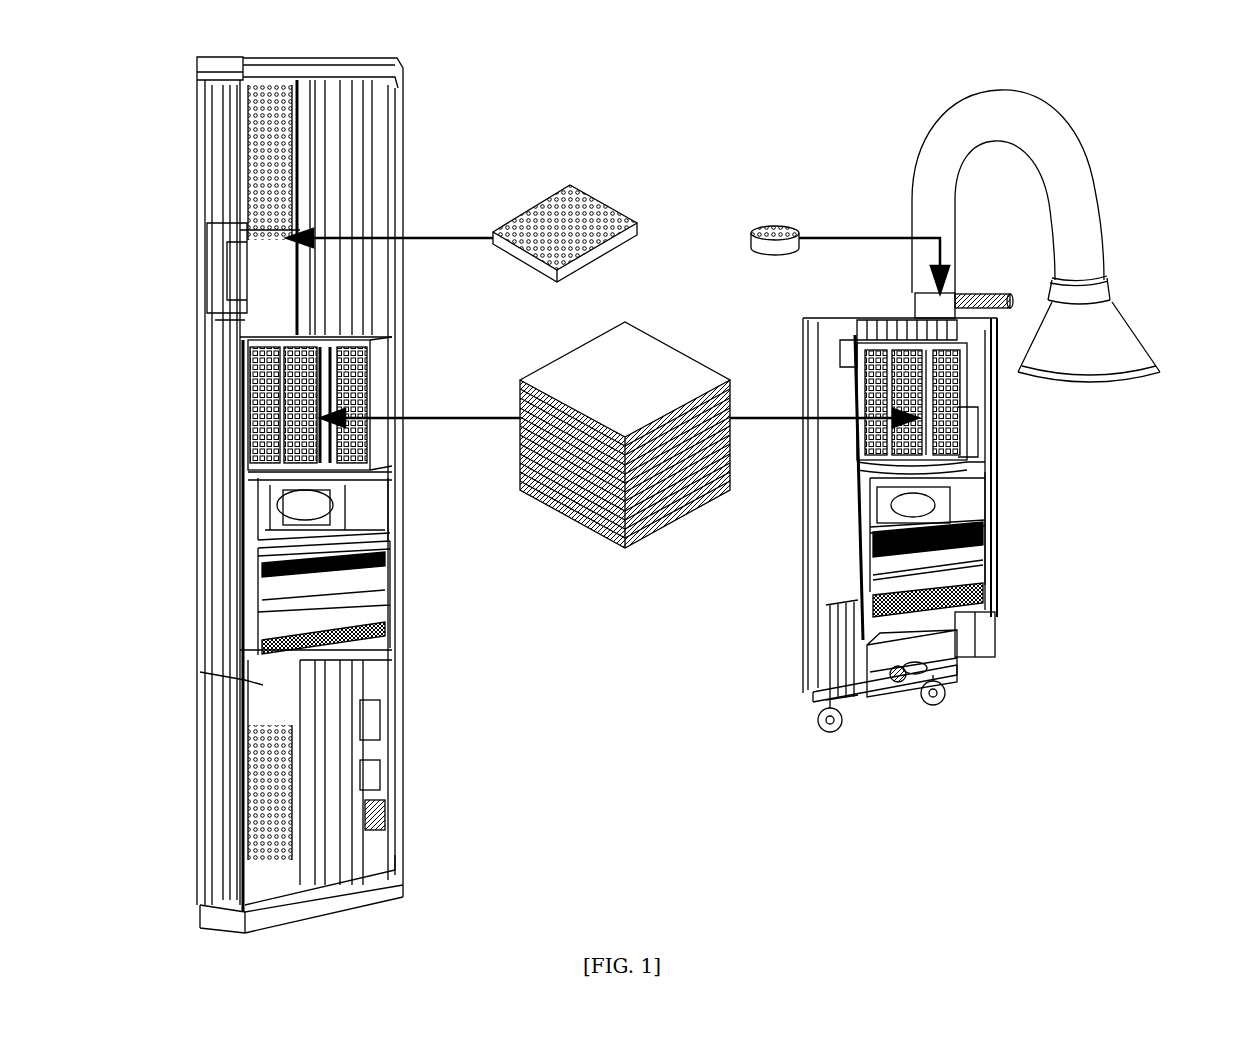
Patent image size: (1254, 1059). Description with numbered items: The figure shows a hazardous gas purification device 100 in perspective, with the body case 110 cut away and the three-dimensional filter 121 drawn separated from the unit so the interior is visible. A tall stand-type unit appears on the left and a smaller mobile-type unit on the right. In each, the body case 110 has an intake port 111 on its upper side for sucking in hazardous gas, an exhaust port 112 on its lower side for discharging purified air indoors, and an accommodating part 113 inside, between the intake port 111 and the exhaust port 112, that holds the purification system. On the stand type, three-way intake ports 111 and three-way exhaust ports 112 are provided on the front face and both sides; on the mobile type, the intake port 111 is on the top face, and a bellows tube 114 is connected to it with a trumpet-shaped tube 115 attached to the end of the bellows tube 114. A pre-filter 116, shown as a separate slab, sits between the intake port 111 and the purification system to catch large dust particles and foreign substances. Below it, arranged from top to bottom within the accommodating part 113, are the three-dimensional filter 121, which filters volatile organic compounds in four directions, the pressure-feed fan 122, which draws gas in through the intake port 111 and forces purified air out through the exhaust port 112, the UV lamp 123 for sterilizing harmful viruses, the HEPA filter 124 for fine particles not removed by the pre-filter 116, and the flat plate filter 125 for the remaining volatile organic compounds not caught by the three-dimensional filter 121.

The hazardous gas purification device 100 is at (915, 84).
The body case 110 is at (398, 270).
The intake port 111 is at (285, 197).
The exhaust port 112 is at (398, 782).
The accommodating part 113 is at (290, 318).
The bellows tube 114 is at (1073, 178).
The trumpet-shaped tube 115 is at (1128, 333).
The pre-filter 116 is at (748, 238).
The three-dimensional filter 121 is at (247, 398).
The pressure-feed fan 122 is at (357, 500).
The UV lamp 123 is at (372, 548).
The HEPA filter 124 is at (383, 588).
The flat plate filter 125 is at (383, 630).